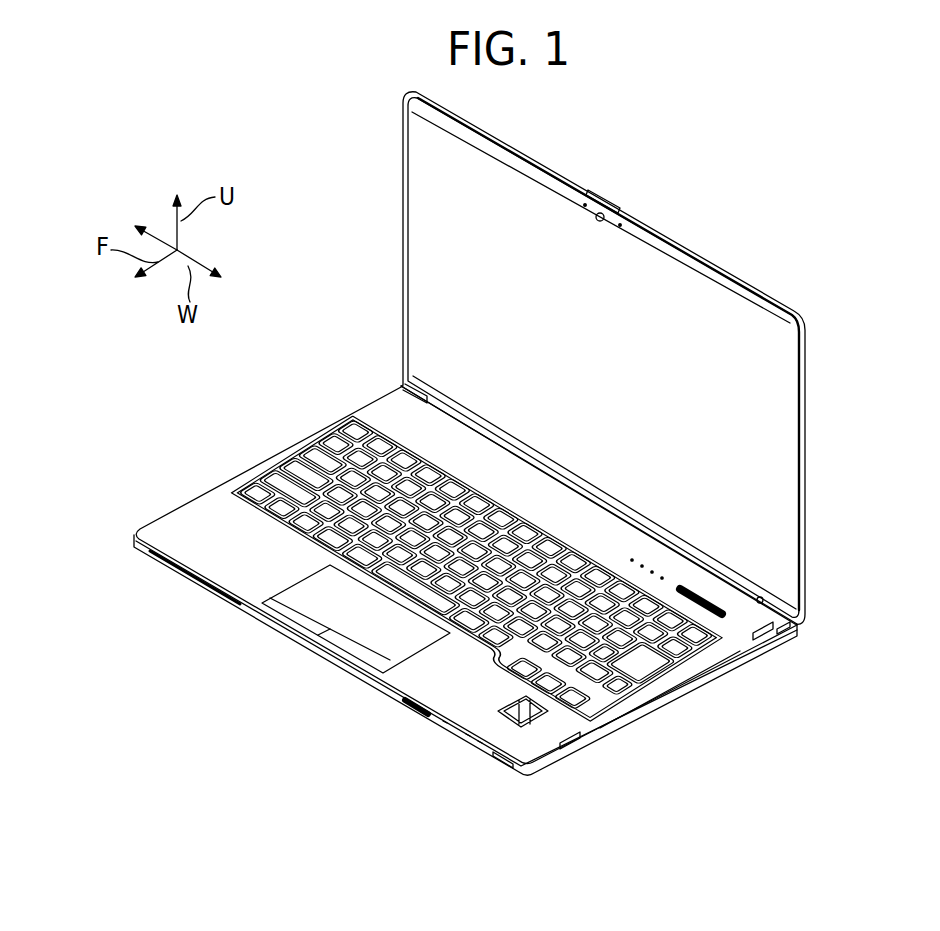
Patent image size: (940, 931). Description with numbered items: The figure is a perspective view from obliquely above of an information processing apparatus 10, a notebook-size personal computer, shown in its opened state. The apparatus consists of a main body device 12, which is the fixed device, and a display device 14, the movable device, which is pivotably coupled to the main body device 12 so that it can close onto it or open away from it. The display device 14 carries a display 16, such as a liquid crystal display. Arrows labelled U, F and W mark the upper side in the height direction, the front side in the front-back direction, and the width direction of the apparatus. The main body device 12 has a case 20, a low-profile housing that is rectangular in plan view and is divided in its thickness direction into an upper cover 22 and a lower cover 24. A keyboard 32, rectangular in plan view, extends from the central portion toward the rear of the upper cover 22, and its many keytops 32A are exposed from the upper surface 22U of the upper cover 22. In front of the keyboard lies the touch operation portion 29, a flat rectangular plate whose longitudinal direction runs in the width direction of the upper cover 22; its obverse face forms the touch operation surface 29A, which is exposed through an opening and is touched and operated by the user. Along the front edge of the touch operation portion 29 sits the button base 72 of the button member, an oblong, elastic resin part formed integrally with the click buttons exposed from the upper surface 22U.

The information processing apparatus 10 is at (833, 227).
The main body device 12 is at (593, 761).
The display device 14 is at (812, 436).
The display 16 is at (758, 382).
The case 20 is at (793, 686).
The upper cover 22 is at (708, 673).
The upper surface of the upper cover 22U is at (467, 693).
The lower cover 24 is at (650, 715).
The touch operation portion 29 is at (309, 582).
The touch operation surface 29A is at (425, 667).
The keyboard 32 is at (299, 466).
The keytops 32A is at (372, 456).
The button base 72 is at (290, 614).